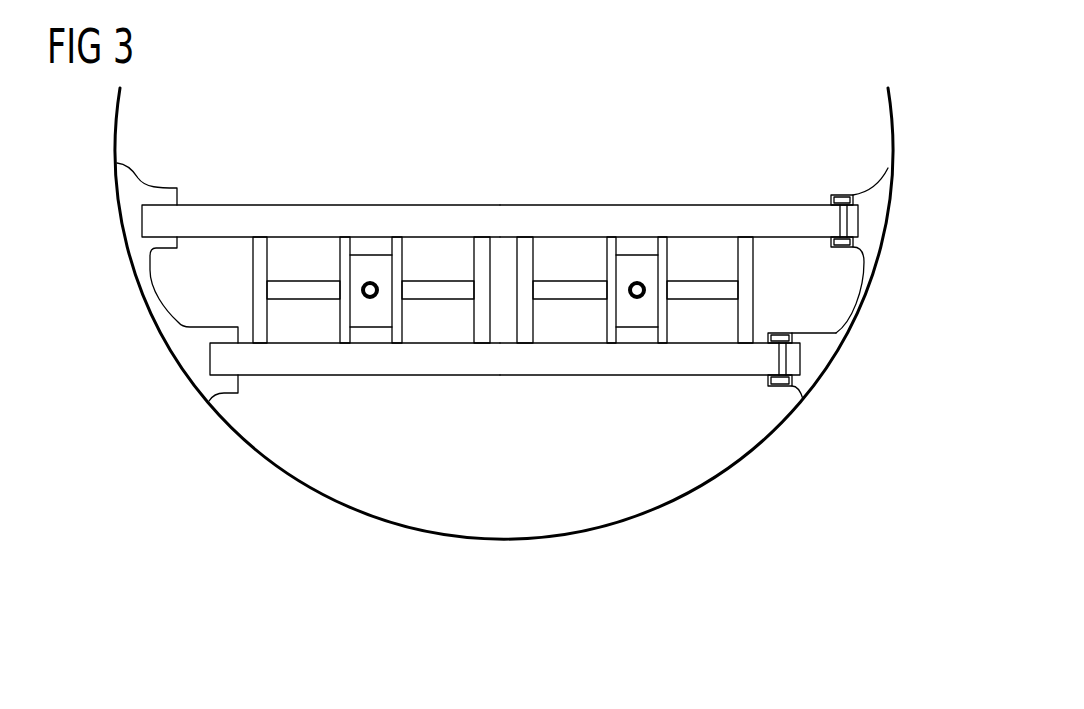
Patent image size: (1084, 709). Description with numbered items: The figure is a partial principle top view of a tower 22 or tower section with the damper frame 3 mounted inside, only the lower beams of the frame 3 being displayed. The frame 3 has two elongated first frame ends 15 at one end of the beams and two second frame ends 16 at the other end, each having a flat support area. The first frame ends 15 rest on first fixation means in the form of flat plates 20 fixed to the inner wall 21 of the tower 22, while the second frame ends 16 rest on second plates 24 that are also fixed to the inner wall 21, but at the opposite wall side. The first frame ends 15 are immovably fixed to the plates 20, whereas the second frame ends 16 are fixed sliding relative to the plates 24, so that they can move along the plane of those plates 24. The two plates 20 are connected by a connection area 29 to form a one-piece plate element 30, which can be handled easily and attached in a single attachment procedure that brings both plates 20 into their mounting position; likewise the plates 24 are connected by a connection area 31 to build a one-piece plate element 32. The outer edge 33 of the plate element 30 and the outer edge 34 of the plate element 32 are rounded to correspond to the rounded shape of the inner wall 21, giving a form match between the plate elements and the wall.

The frame 3 is at (564, 193).
The first frame ends 15 is at (200, 213).
The second frame ends 16 is at (805, 212).
The plates 20 is at (128, 193).
The inner wall 21 is at (500, 537).
The tower 22 is at (763, 494).
The plates 24 is at (878, 193).
The connection area 29 is at (148, 296).
The one-piece plate element 30 is at (112, 239).
The connection area 31 is at (860, 293).
The one-piece plate element 32 is at (891, 240).
The outer edge 33 is at (162, 323).
The outer edge 34 is at (850, 332).